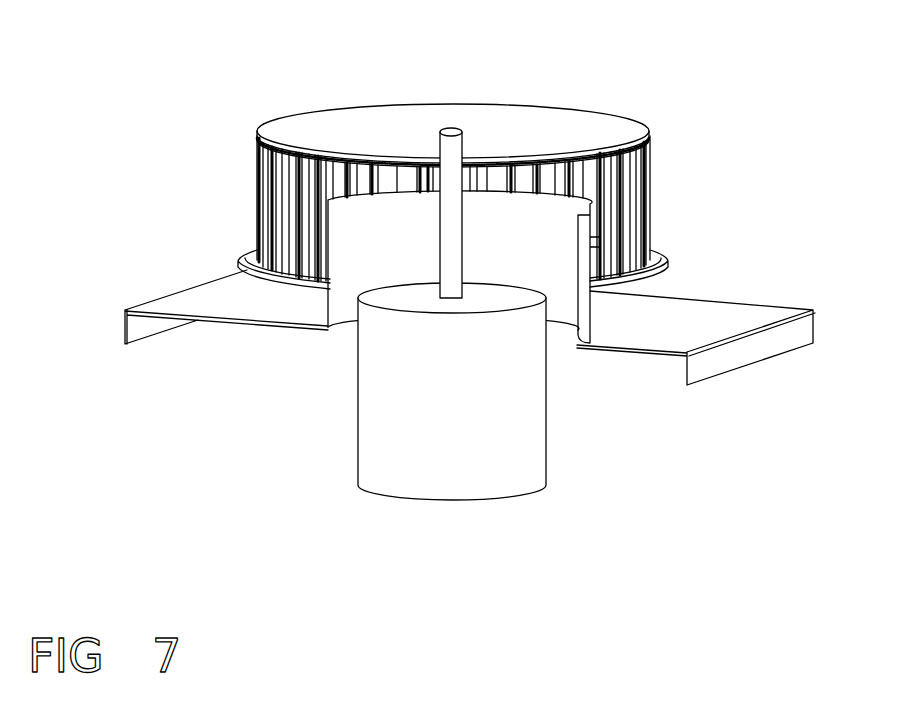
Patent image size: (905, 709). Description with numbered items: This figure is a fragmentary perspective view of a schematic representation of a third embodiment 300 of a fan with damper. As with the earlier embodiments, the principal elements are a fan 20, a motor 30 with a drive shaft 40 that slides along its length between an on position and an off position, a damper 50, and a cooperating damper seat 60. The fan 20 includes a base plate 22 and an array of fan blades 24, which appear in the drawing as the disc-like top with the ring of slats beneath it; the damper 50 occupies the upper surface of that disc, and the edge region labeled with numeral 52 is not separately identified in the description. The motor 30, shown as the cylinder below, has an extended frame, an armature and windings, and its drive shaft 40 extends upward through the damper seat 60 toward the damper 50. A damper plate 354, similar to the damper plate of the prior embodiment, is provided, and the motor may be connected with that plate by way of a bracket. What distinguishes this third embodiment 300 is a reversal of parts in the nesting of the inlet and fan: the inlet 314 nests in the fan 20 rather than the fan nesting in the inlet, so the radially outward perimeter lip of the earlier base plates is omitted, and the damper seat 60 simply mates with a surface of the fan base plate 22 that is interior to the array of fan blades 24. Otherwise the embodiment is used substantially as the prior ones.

The fan 20 is at (472, 153).
The base plate 22 is at (472, 153).
The fan blades 24 is at (655, 190).
The motor 30 is at (522, 462).
The drive shaft 40 is at (453, 205).
The damper 50 is at (380, 117).
The top edge 52 is at (317, 117).
The damper seat 60 is at (364, 197).
The third embodiment 300 is at (441, 422).
The inlet 314 is at (584, 328).
The damper plate 354 is at (193, 298).